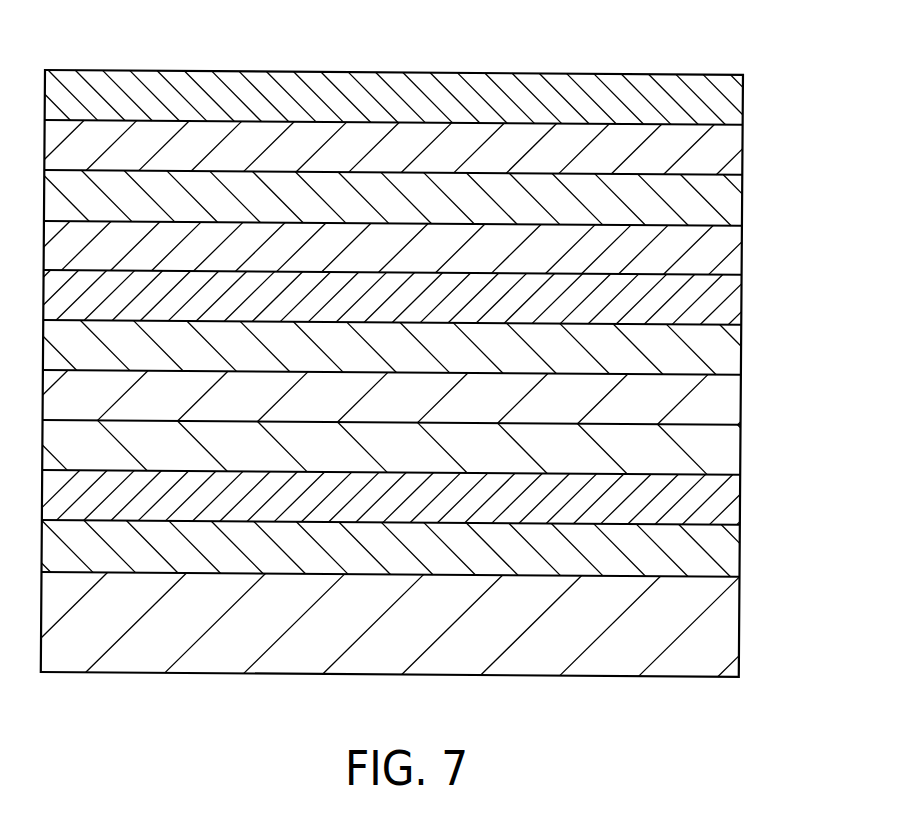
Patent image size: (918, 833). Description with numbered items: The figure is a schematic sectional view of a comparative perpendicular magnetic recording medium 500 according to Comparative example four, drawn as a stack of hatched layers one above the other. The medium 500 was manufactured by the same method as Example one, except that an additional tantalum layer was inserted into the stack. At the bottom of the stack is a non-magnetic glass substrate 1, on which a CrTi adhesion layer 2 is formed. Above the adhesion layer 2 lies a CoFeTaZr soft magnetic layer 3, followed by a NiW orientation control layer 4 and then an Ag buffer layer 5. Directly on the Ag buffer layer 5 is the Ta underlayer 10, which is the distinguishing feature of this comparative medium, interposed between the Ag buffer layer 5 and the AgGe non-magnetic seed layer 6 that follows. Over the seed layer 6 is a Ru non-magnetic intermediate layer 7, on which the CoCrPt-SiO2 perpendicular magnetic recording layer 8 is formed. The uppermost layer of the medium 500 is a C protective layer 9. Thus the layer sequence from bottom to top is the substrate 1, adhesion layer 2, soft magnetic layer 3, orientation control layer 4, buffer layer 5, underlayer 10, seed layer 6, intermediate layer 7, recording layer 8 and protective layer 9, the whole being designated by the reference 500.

The perpendicular magnetic recording medium 500 is at (420, 343).
The non-magnetic glass substrate 1 is at (732, 552).
The CrTi adhesion layer 2 is at (732, 497).
The CoFeTaZr soft magnetic layer 3 is at (732, 449).
The NiW orientation control layer 4 is at (732, 400).
The Ag buffer layer 5 is at (732, 352).
The AgGe non-magnetic seed layer 6 is at (732, 252).
The Ru non-magnetic intermediate layer 7 is at (732, 205).
The CoCrPt-SiO2 perpendicular magnetic recording layer 8 is at (732, 152).
The C protective layer 9 is at (733, 102).
The Ta underlayer 10 is at (732, 299).